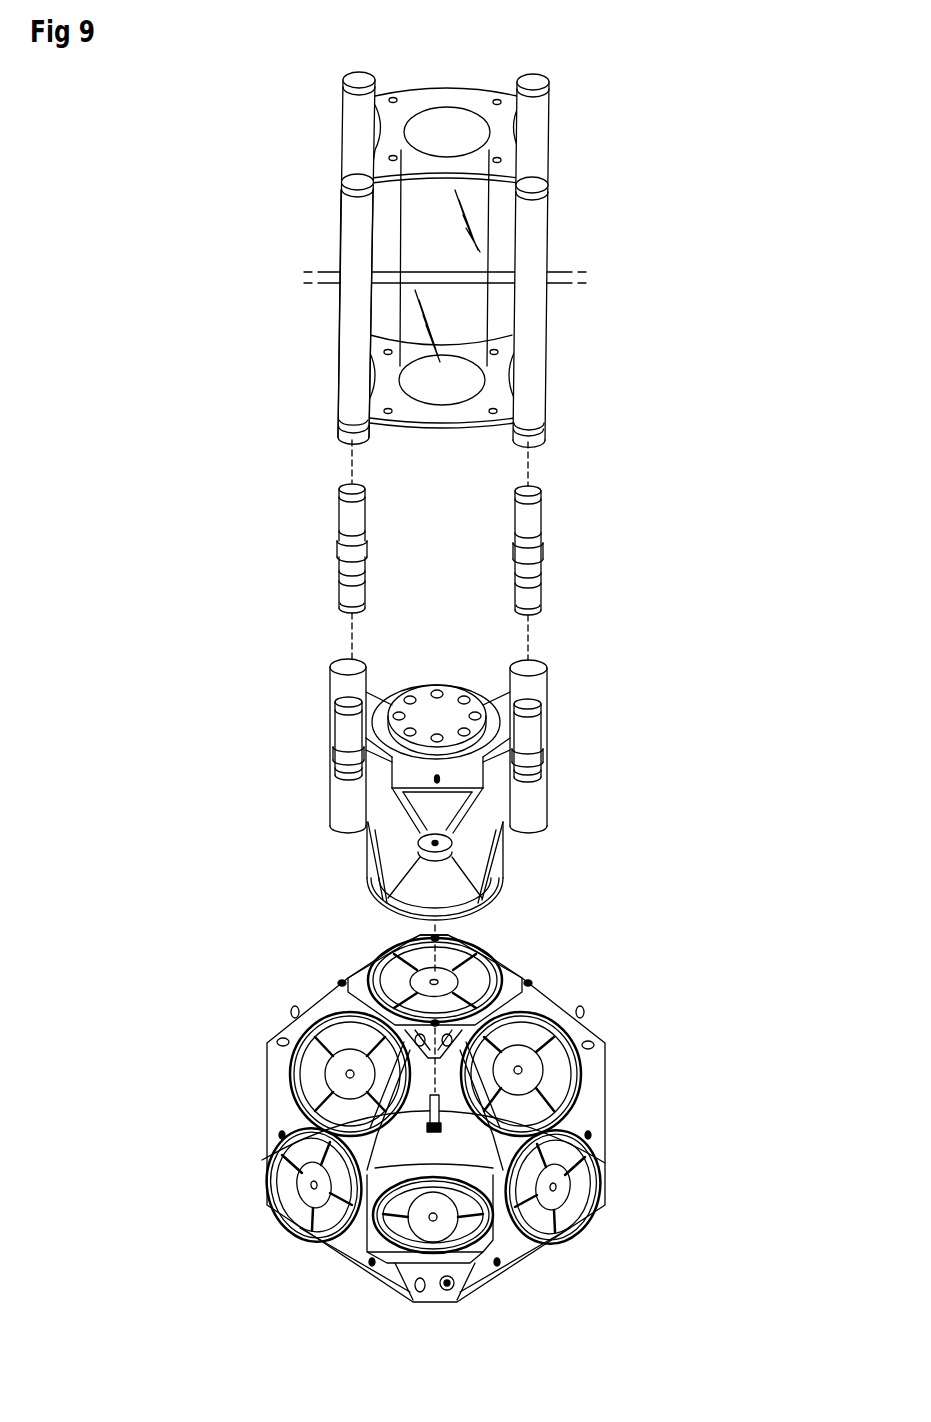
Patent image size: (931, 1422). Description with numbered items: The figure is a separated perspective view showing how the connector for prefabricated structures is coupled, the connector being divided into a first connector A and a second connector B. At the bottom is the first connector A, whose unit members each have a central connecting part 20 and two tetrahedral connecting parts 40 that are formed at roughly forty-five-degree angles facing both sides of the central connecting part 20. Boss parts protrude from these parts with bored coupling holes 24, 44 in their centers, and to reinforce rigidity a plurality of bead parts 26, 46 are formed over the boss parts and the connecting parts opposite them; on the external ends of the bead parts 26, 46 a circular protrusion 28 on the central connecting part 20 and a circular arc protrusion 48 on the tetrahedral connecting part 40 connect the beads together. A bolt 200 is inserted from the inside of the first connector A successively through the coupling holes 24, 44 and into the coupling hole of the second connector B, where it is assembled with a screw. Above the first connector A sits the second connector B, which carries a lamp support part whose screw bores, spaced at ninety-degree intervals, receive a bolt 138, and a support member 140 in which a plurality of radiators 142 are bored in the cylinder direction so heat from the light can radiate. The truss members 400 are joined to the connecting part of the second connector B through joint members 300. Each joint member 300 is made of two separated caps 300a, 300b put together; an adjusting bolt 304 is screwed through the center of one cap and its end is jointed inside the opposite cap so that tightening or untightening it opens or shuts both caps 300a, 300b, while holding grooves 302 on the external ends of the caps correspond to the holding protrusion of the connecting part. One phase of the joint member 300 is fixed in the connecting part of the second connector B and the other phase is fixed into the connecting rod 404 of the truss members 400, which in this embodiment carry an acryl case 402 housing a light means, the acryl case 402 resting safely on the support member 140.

The truss members 400 is at (450, 259).
The acryl case 402 is at (467, 315).
The connecting rod 404 is at (348, 355).
The joint member 300 is at (445, 540).
The cap 300a is at (364, 518).
The cap 300b is at (338, 592).
The holding groove 302 is at (336, 578).
The adjusting bolt 304 is at (542, 552).
The second connector B is at (421, 784).
The support member 140 is at (418, 690).
The radiators 142 is at (443, 690).
The bolt 138 is at (440, 777).
The first connector A is at (450, 1104).
The bolt 200 is at (282, 1161).
The central connecting part 20 is at (385, 965).
The coupling hole 24 is at (430, 978).
The bead parts 26 is at (390, 985).
The circular protrusion 28 is at (480, 988).
The bead parts 46 is at (574, 1053).
The coupling hole 44 is at (521, 1070).
The tetrahedral connecting parts 40 is at (548, 1090).
The circular arc protrusion 48 is at (570, 1104).